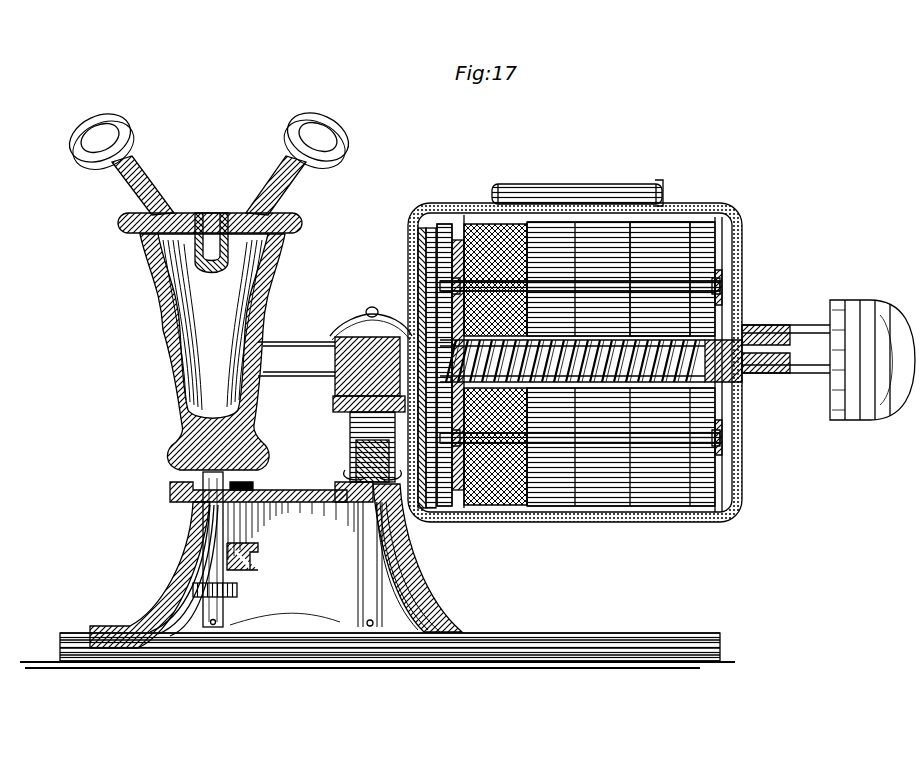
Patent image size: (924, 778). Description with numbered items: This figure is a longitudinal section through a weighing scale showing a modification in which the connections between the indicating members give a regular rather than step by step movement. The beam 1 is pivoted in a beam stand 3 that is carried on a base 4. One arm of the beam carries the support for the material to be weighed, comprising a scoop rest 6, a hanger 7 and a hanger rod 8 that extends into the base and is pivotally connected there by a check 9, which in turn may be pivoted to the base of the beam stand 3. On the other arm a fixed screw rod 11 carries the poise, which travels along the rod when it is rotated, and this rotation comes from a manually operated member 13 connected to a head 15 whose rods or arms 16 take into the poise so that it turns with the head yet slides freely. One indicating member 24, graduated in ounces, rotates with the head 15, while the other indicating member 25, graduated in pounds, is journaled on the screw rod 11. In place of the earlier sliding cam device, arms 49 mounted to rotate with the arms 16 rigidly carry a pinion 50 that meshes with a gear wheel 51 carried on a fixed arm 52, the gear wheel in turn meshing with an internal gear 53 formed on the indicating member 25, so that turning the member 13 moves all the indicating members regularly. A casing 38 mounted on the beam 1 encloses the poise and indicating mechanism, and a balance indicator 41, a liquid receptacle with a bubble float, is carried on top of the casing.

The beam 1 is at (760, 325).
The beam stand 3 is at (356, 424).
The base 4 is at (432, 580).
The scoop rest 6 is at (256, 182).
The hanger 7 is at (165, 352).
The hanger rod 8 is at (205, 508).
The check 9 is at (280, 618).
The screw rod 11 is at (498, 524).
The manually operated member 13 is at (888, 302).
The head 15 is at (720, 436).
The rods or arms 16 is at (670, 455).
The indicating member 24 is at (628, 516).
The indicating member 25 is at (524, 516).
The casing 38 is at (722, 516).
The balance indicator 41 is at (664, 186).
The arms 49 is at (460, 514).
The pinion 50 is at (416, 322).
The gear wheel 51 is at (434, 515).
The arm 52 is at (418, 278).
The internal gear 53 is at (448, 212).